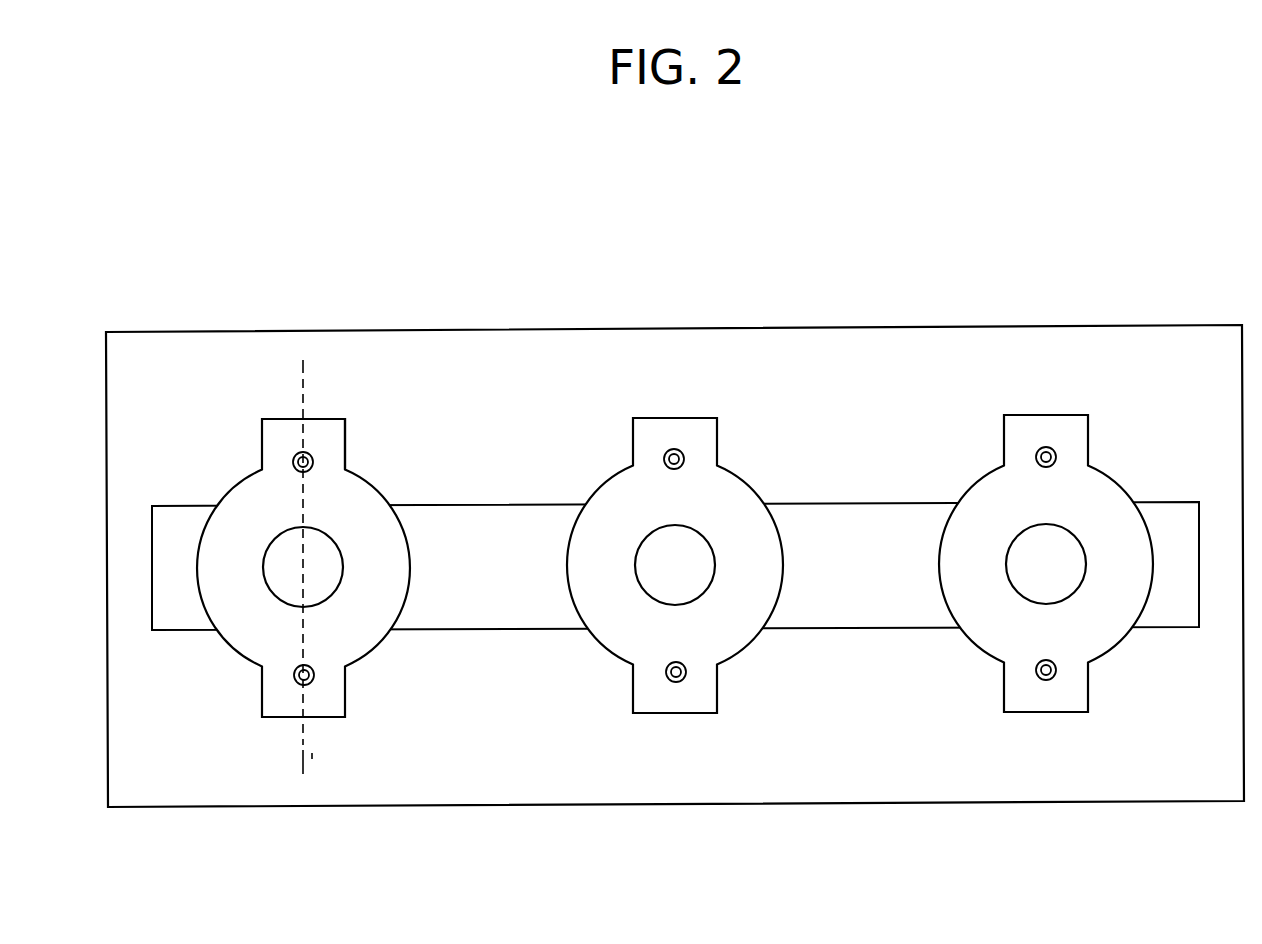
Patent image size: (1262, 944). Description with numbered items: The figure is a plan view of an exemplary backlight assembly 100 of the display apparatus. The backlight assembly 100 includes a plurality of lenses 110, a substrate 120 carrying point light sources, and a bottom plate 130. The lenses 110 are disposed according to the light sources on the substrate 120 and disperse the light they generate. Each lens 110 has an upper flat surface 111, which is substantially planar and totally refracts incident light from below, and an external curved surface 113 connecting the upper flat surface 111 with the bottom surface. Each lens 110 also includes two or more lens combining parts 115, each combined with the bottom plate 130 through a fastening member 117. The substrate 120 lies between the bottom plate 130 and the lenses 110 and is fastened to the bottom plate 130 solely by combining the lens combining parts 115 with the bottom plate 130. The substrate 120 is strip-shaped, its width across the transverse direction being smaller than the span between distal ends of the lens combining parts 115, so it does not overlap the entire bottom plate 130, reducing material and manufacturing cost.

The backlight assembly 100 is at (672, 205).
The lens 110 is at (391, 440).
The upper flat surface 111 is at (334, 582).
The external curved surface 113 is at (373, 497).
The lens combining part 115 is at (333, 437).
The fastening member 117 is at (292, 462).
The substrate 120 is at (893, 508).
The bottom plate 130 is at (1078, 325).